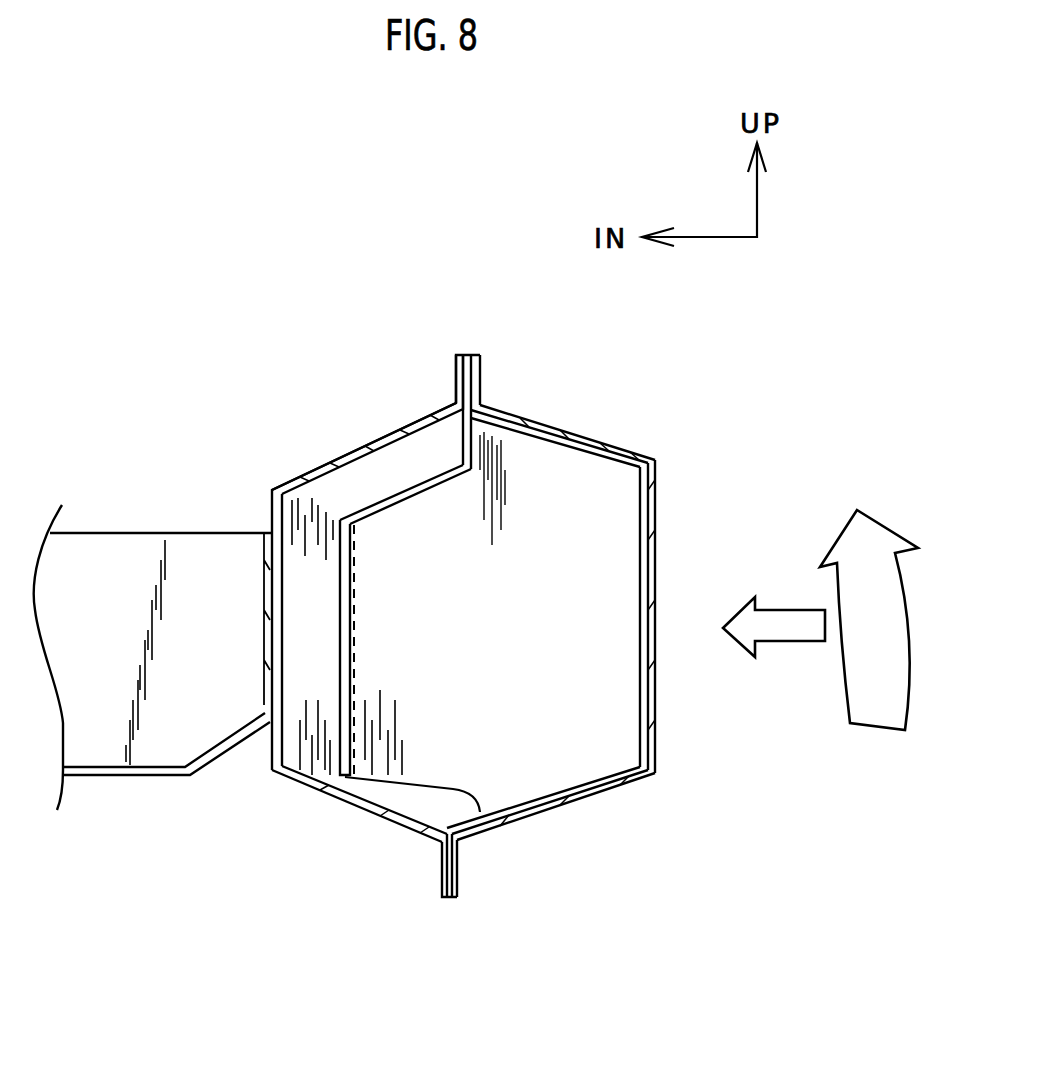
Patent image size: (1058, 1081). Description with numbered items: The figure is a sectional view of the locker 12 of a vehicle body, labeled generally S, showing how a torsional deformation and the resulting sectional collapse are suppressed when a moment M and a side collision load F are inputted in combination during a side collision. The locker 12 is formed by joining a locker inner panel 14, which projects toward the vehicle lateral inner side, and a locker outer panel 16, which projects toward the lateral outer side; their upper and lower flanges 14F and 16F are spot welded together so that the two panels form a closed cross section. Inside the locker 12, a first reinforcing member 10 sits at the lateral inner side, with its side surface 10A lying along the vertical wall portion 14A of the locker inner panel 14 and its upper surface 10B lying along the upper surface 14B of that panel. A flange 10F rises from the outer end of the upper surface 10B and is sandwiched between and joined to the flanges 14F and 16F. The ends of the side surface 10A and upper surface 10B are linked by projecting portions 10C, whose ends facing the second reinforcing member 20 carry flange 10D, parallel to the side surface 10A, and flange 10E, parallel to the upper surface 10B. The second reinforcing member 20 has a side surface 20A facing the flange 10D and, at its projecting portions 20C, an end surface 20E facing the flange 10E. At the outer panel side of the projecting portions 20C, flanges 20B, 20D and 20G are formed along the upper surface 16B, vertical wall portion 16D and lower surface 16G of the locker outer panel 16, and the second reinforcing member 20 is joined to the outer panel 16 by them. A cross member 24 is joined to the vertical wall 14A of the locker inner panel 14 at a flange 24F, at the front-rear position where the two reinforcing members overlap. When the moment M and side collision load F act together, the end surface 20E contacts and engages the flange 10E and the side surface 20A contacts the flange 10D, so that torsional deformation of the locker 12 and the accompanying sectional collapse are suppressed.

The vehicle seat structure S is at (295, 318).
The first reinforcing member 10 is at (362, 606).
The side surface 10A is at (268, 592).
The upper surface 10B is at (340, 460).
The projecting portions 10C is at (303, 653).
The flange 10D is at (348, 667).
The flange 10E is at (393, 497).
The flange 10F is at (480, 380).
The locker 12 is at (576, 380).
The locker inner panel 14 is at (350, 616).
The vertical wall portion 14A is at (282, 776).
The upper surface 14B is at (395, 436).
The flange 14F is at (455, 380).
The locker outer panel 16 is at (610, 608).
The upper surface 16B is at (583, 450).
The vertical wall portion 16D is at (650, 578).
The flange 16F is at (483, 370).
The lower surface 16G is at (618, 787).
The second reinforcing member 20 is at (545, 637).
The side surface 20A is at (345, 632).
The flange 20B is at (623, 457).
The projecting portions 20C is at (580, 712).
The flange 20D is at (650, 680).
The end surface 20E is at (404, 484).
The flange 20G is at (588, 797).
The cross member 24 is at (128, 530).
The flange 24F is at (266, 645).
The side collision load F is at (761, 627).
The moment M is at (869, 601).